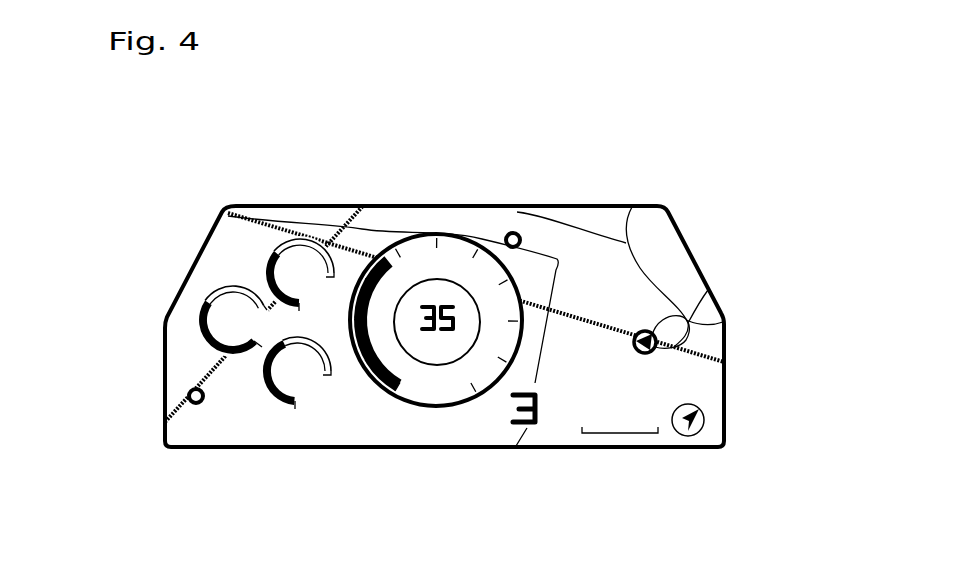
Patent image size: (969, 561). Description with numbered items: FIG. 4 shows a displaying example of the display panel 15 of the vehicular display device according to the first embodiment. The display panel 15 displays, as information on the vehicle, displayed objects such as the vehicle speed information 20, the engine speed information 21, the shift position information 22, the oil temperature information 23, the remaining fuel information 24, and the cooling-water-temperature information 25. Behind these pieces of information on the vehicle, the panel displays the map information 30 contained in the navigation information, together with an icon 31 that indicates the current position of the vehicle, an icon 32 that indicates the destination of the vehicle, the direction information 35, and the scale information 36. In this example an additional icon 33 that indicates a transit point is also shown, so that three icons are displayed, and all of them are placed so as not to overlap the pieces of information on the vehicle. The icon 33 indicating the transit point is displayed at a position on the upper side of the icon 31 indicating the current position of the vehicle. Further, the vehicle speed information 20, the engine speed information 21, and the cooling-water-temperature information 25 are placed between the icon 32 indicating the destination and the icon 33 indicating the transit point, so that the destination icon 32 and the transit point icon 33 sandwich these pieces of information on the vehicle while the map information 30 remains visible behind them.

The display panel 15 is at (642, 122).
The vehicle speed information 20 is at (432, 293).
The engine speed information 21 is at (450, 415).
The shift position information 22 is at (537, 432).
The oil temperature information 23 is at (257, 250).
The remaining fuel information 24 is at (197, 299).
The cooling-water-temperature information 25 is at (272, 405).
The map information 30 is at (667, 250).
The icon indicating current position of the vehicle 31 is at (657, 338).
The icon indicating destination of the vehicle 32 is at (188, 396).
The icon indicating transit point 33 is at (513, 232).
The direction information 35 is at (705, 421).
The scale information 36 is at (648, 435).